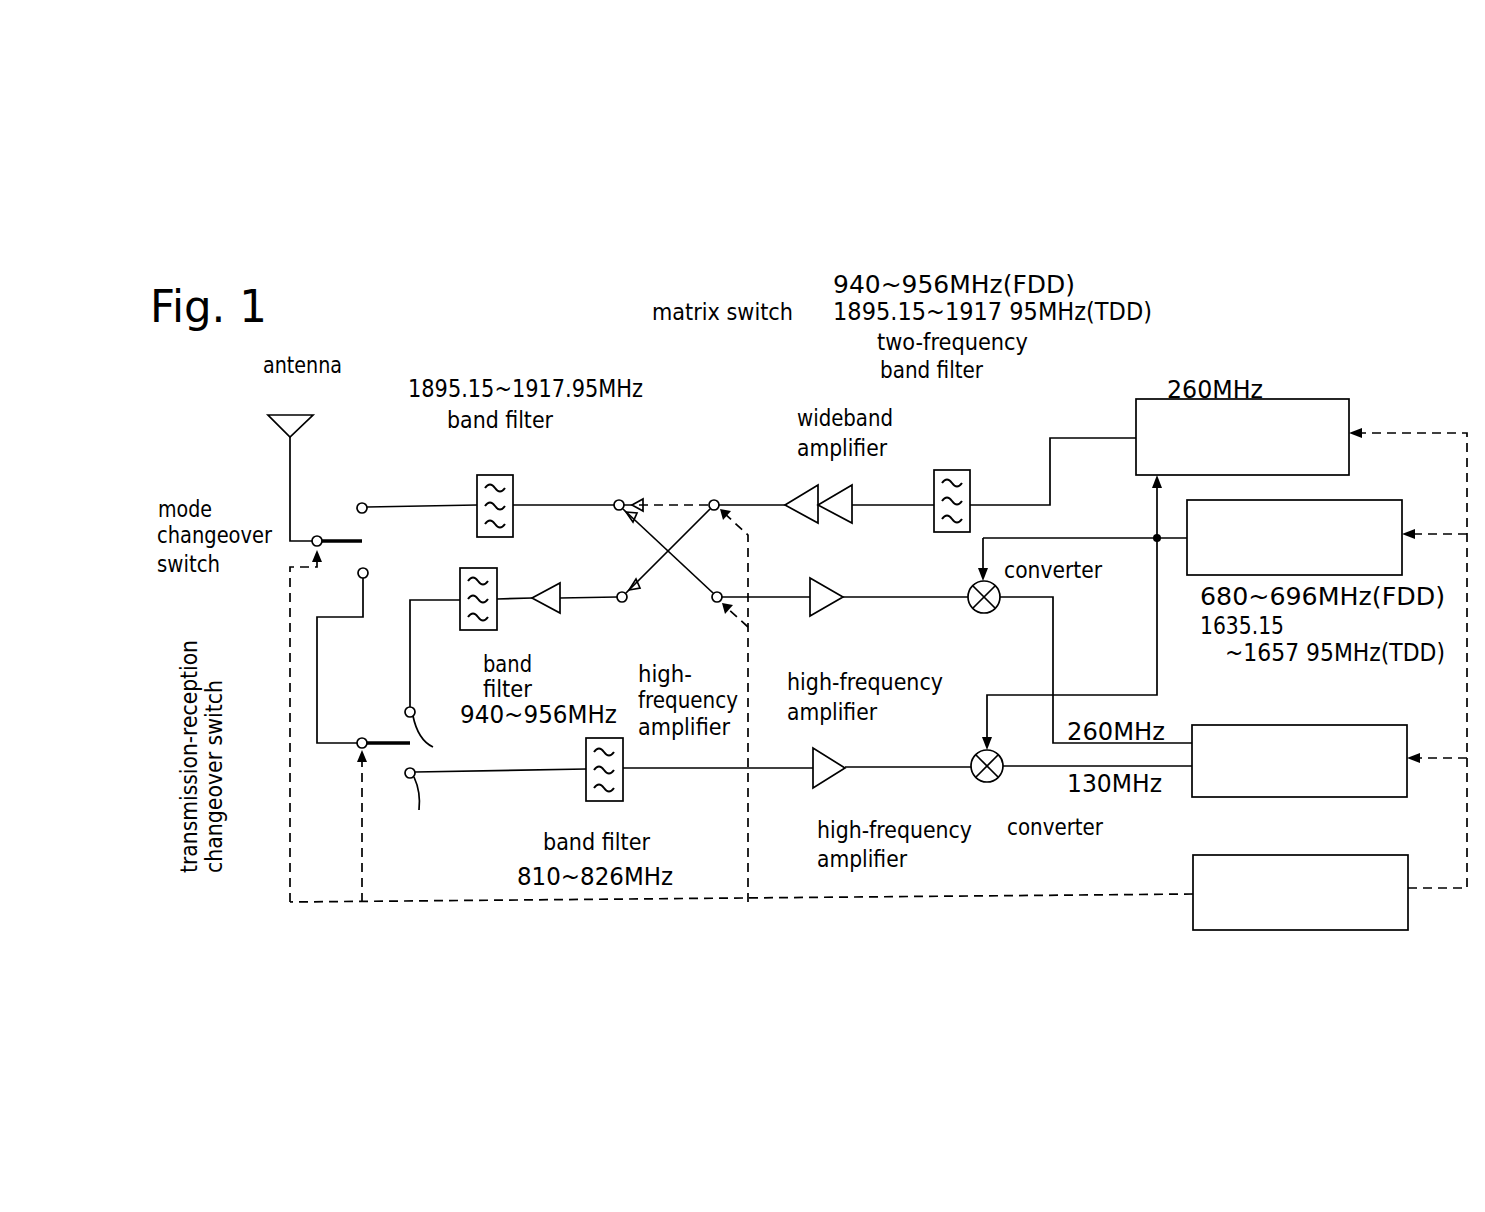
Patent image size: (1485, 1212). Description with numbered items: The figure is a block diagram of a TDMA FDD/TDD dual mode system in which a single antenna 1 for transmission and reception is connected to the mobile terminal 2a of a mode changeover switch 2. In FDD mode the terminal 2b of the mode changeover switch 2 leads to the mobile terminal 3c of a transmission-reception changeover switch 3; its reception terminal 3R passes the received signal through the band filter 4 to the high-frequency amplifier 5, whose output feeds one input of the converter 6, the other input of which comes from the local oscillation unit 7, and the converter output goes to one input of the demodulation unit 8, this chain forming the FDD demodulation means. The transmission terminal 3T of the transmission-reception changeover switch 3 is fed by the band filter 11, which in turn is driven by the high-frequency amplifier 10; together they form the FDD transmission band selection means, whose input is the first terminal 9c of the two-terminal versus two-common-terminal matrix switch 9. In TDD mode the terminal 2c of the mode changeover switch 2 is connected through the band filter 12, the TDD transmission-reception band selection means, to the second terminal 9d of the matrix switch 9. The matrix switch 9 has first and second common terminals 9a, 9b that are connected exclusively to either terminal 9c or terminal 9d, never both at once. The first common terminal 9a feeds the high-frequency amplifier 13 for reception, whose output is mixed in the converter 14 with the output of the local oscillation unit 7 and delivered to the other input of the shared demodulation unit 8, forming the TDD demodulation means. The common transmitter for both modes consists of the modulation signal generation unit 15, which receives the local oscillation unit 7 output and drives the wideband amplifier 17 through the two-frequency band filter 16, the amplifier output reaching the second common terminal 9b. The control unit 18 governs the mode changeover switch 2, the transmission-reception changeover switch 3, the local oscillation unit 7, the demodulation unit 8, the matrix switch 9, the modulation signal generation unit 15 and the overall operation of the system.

The antenna 1 is at (283, 418).
The mode changeover switch 2 is at (357, 603).
The mobile terminal of mode changeover switch 2a is at (299, 585).
The terminal of mode changeover switch 2b is at (368, 570).
The terminal of mode changeover switch 2c is at (367, 504).
The transmission-reception changeover switch 3 is at (413, 730).
The mobile terminal of transmission-reception changeover switch 3c is at (325, 799).
The terminal of transmission-reception changeover switch 3T is at (437, 685).
The terminal of transmission-reception changeover switch 3R is at (495, 809).
The band filter 4 is at (587, 790).
The high-frequency amplifier 5 is at (815, 782).
The converter 6 is at (986, 783).
The local oscillation unit 7 is at (1370, 500).
The demodulation unit 8 is at (1392, 725).
The matrix switch 9 is at (652, 489).
The first common terminal of matrix switch 9a is at (714, 602).
The second common terminal of matrix switch 9b is at (714, 500).
The first terminal of matrix switch 9c is at (621, 602).
The second terminal of matrix switch 9d is at (616, 500).
The high-frequency amplifier 10 is at (550, 615).
The band filter 11 is at (480, 632).
The band filter 12 is at (490, 475).
The high-frequency amplifier 13 is at (812, 613).
The converter 14 is at (990, 612).
The modulation signal generation unit 15 is at (1290, 398).
The two-frequency band filter 16 is at (948, 470).
The wideband amplifier 17 is at (798, 498).
The control unit 18 is at (1388, 855).